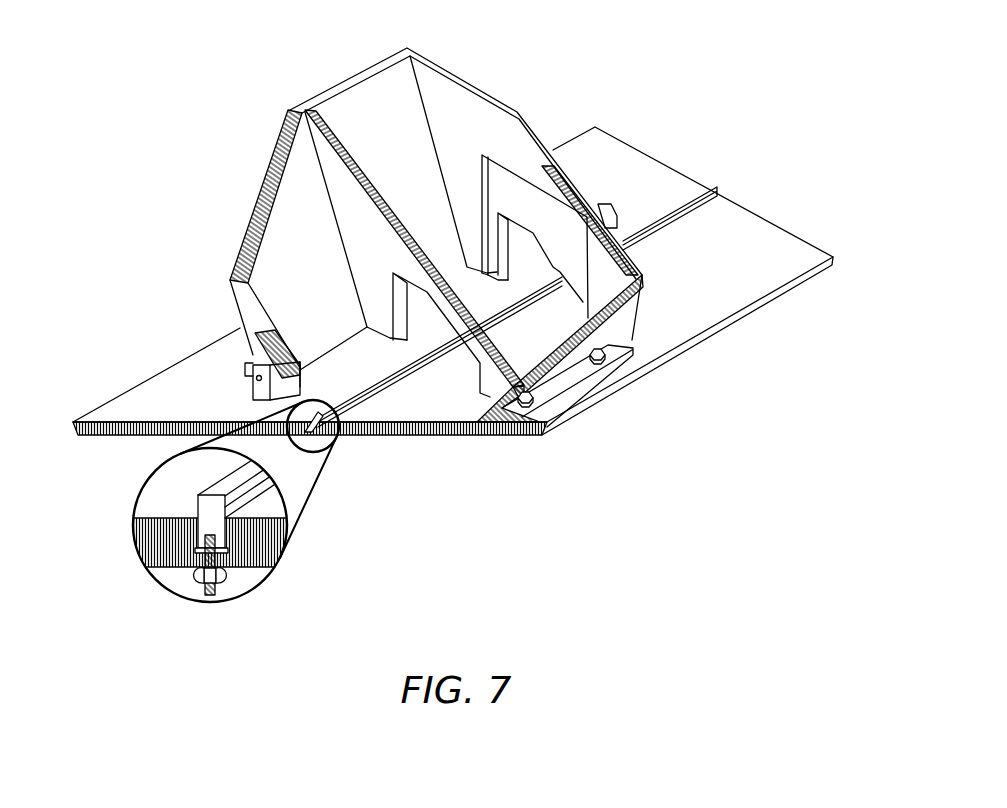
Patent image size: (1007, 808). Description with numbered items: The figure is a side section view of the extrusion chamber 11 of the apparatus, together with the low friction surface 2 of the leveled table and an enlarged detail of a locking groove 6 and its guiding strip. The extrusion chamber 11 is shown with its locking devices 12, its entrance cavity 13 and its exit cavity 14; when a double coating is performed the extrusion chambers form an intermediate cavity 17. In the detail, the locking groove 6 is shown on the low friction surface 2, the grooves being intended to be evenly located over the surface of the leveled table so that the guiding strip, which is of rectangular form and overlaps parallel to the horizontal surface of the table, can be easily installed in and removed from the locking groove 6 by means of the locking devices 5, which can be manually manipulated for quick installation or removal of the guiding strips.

The low friction surface 2 is at (600, 146).
The guiding strip locking devices 5 is at (203, 583).
The locking grooves 6 is at (203, 560).
The extrusion chambers 11 is at (637, 260).
The locking devices for the extrusion chamber 12 is at (613, 358).
The entrance cavity 13 is at (240, 368).
The exit cavity 14 is at (550, 246).
The intermediate cavity 17 is at (362, 256).